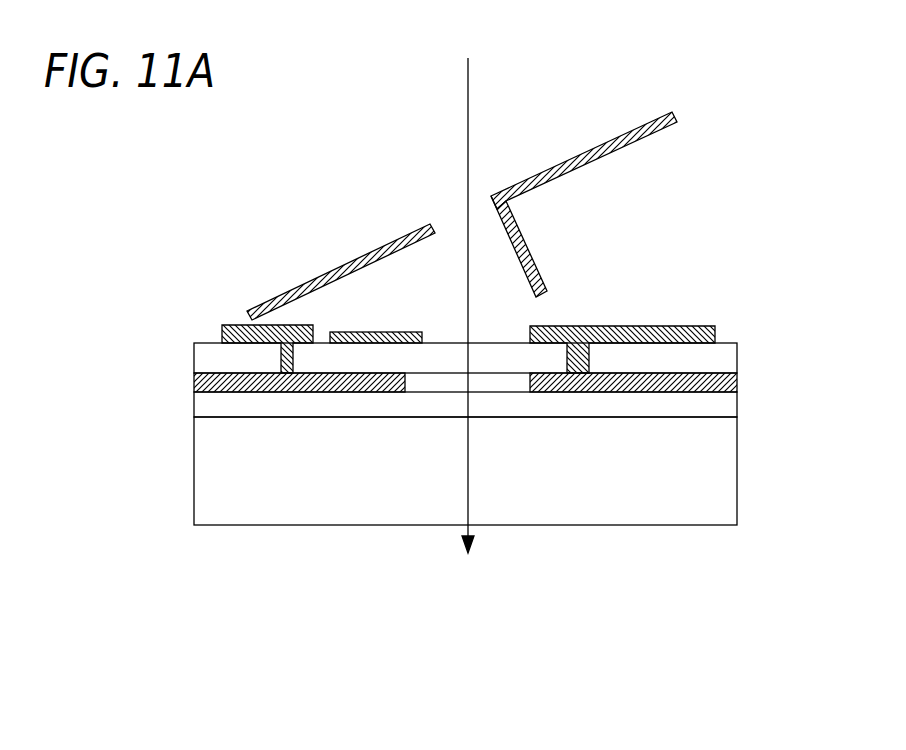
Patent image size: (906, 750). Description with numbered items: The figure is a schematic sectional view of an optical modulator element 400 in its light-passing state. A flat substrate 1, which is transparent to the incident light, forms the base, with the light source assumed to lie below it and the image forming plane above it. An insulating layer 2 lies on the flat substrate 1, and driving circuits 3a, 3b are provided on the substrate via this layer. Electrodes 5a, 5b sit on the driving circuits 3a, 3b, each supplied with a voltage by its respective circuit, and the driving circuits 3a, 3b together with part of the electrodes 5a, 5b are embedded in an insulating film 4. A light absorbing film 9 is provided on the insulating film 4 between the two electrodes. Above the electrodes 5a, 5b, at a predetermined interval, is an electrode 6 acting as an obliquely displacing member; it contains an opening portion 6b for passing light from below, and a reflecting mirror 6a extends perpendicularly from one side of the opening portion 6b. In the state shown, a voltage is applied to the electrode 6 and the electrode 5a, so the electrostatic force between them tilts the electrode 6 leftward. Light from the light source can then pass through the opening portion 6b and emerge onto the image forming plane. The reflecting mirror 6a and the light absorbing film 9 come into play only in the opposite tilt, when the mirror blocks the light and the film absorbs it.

The optical modulator element 400 is at (740, 203).
The flat substrate 1 is at (733, 473).
The insulating layer 2 is at (737, 411).
The driving circuit 3a is at (196, 386).
The driving circuit 3b is at (737, 384).
The insulating film 4 is at (737, 357).
The electrode 5a is at (228, 331).
The electrode 5b is at (716, 330).
The electrode 6 is at (321, 273).
The reflecting mirror 6a is at (528, 256).
The opening portion 6b is at (445, 215).
The light absorbing film 9 is at (400, 331).